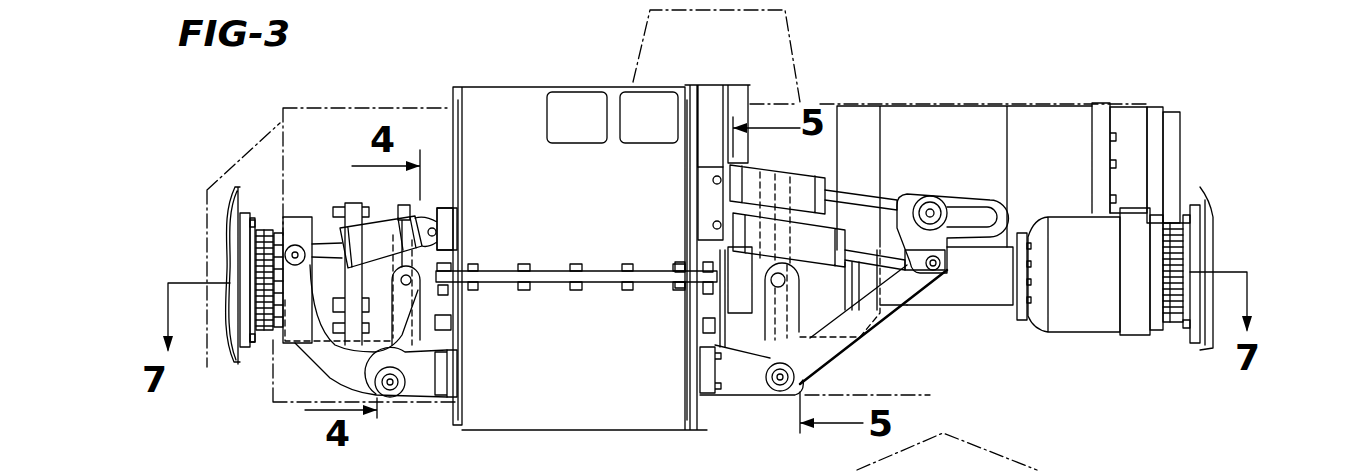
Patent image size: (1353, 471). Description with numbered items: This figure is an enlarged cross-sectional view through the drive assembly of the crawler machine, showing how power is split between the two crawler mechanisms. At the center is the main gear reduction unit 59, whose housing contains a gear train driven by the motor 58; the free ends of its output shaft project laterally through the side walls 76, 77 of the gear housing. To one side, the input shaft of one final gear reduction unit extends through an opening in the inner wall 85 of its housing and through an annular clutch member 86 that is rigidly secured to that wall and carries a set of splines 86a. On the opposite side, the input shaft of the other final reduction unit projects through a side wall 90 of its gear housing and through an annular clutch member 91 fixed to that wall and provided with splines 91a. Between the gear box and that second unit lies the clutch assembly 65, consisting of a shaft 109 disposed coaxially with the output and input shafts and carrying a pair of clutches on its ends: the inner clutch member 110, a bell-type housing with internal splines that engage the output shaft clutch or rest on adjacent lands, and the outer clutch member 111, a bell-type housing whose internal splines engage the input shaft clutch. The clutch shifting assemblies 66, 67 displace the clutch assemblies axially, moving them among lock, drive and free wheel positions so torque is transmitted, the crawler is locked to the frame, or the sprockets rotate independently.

The motor 58 is at (967, 152).
The main gear reduction unit 59 is at (586, 207).
The clutch assembly 65 is at (960, 312).
The clutch shifting assembly 66 is at (328, 370).
The clutch shifting assembly 67 is at (840, 362).
The side wall 76 is at (462, 342).
The side wall 77 is at (688, 355).
The inner wall 85 is at (232, 240).
The annular clutch member 86 is at (245, 262).
The splines 86a is at (267, 332).
The side wall 90 is at (1205, 222).
The annular clutch member 91 is at (1195, 247).
The splines 91a is at (1175, 320).
The shaft 109 is at (993, 289).
The inner clutch member 110 is at (838, 294).
The outer clutch member 111 is at (1104, 283).